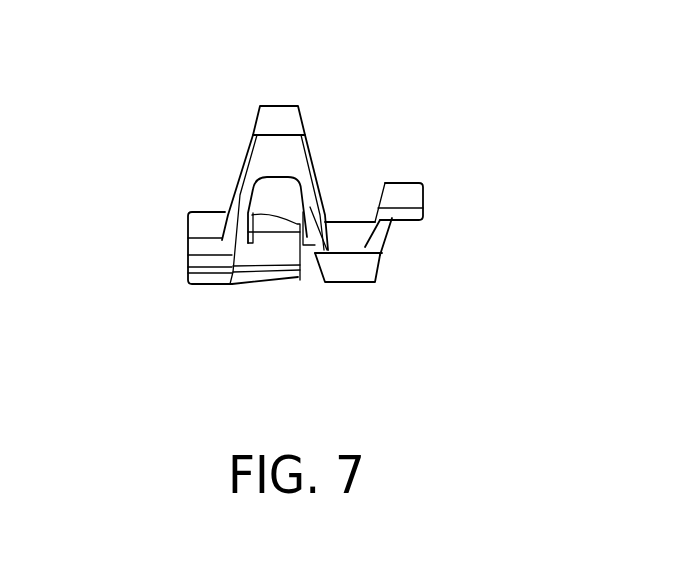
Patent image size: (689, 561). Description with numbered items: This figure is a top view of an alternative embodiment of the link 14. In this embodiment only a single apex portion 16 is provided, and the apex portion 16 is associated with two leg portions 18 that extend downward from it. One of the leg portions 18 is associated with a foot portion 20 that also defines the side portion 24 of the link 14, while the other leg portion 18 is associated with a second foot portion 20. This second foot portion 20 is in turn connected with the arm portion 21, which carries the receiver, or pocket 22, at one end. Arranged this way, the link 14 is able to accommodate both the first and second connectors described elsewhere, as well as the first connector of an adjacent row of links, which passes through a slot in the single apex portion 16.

The link 14 is at (312, 159).
The apex portion 16 is at (280, 120).
The leg portions 18 is at (316, 211).
The foot portion 20 is at (353, 283).
The arm portion 21 is at (386, 226).
The pocket 22 is at (424, 208).
The side portion 24 is at (188, 238).